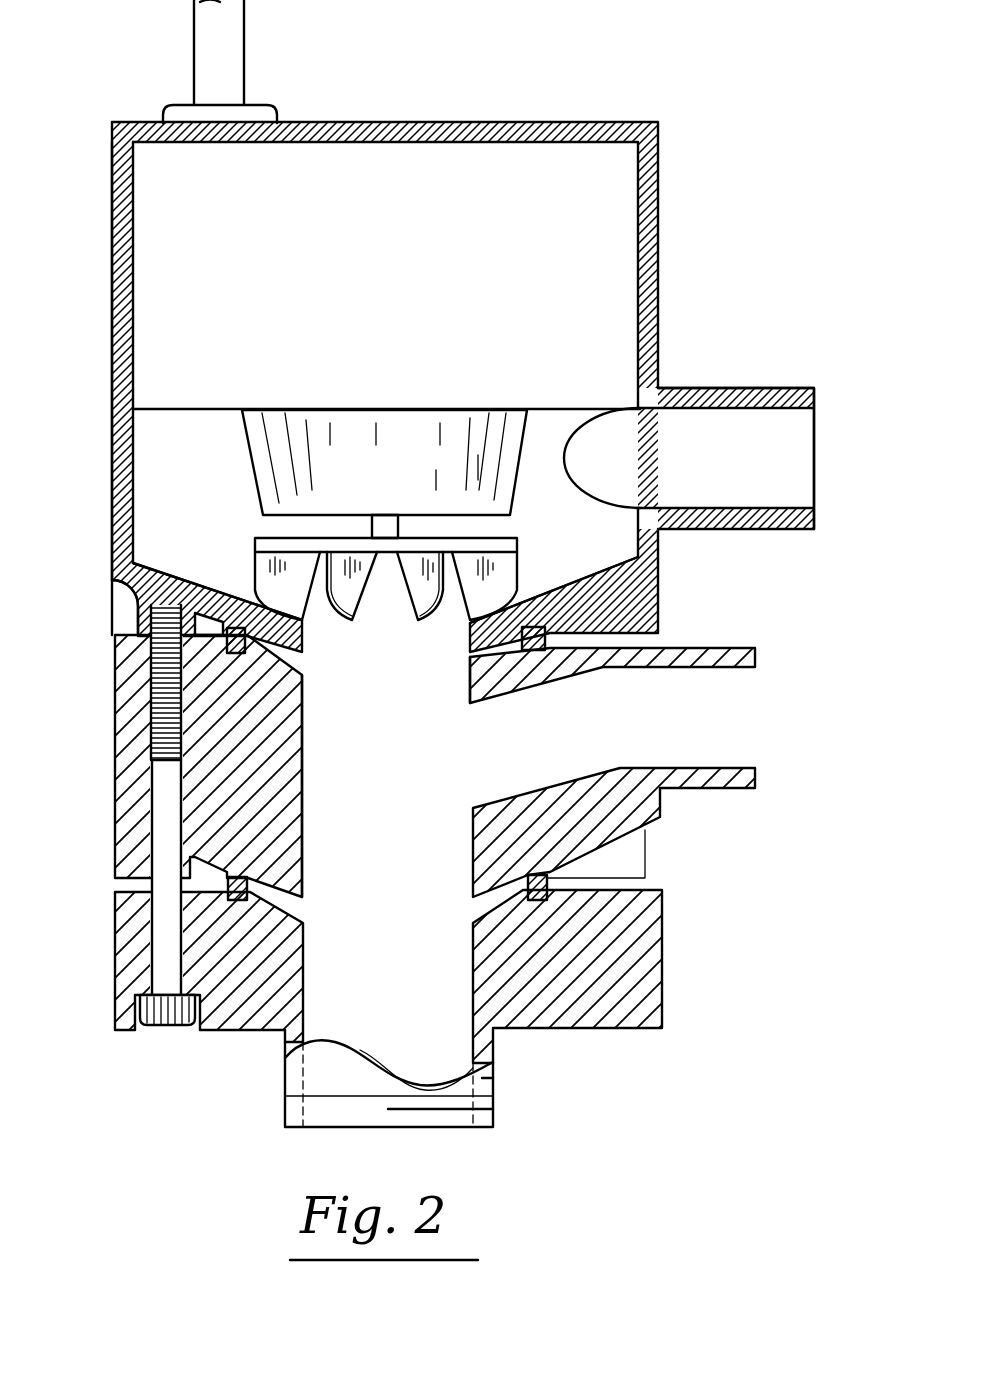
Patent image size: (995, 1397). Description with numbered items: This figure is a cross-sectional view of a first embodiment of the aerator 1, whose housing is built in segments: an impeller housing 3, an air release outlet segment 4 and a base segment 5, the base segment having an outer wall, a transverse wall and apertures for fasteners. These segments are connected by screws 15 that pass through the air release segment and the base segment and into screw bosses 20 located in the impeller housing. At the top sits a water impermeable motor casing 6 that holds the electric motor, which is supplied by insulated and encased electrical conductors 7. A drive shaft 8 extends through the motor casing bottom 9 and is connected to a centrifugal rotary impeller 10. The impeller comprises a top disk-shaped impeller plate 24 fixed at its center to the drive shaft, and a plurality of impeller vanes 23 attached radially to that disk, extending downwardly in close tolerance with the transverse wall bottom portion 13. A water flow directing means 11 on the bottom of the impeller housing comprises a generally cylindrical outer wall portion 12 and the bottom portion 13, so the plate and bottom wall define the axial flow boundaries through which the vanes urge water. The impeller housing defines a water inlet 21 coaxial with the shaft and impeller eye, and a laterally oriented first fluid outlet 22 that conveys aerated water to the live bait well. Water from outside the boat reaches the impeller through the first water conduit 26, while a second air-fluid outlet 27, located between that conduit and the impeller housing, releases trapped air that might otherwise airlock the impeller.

The aerator 1 is at (716, 150).
The impeller housing 3 is at (451, 387).
The air release outlet segment 4 is at (655, 818).
The base segment 5 is at (664, 966).
The motor casing 6 is at (580, 226).
The electrical conductors 7 is at (237, 41).
The drive shaft 8 is at (380, 520).
The motor casing bottom 9 is at (287, 515).
The centrifugal rotary impeller 10 is at (512, 538).
The water flow directing means 11 is at (202, 537).
The outer wall portion 12 is at (112, 472).
The transverse wall bottom portion 13 is at (613, 566).
The screws 15 is at (165, 950).
The screw bosses 20 is at (138, 613).
The water inlet 21 is at (362, 710).
The first fluid outlet 22 is at (790, 458).
The impeller vanes 23 is at (503, 577).
The impeller plate 24 is at (255, 542).
The first water conduit 26 is at (364, 1005).
The second air-fluid outlet 27 is at (740, 740).